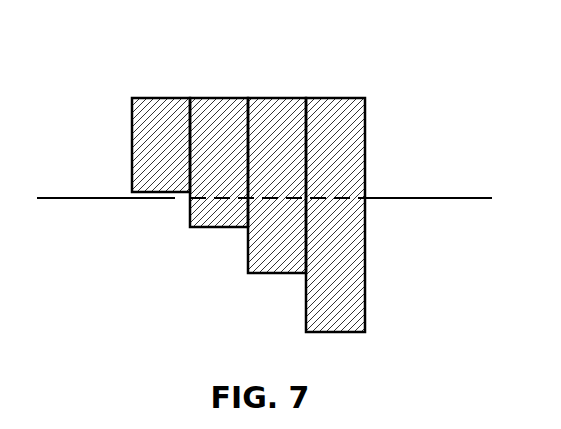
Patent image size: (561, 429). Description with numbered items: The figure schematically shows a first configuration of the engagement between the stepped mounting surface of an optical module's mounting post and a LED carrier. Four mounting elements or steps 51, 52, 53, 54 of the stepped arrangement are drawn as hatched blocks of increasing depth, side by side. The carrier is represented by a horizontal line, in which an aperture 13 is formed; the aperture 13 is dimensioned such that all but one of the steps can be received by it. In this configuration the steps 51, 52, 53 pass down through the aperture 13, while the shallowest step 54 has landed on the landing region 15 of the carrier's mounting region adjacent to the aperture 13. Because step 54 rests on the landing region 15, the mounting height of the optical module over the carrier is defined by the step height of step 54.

The aperture 13 is at (348, 197).
The landing region 15 is at (103, 198).
The mounting element or step 51 is at (343, 110).
The mounting element or step 52 is at (282, 110).
The mounting element or step 53 is at (220, 110).
The mounting element or step 54 is at (158, 110).